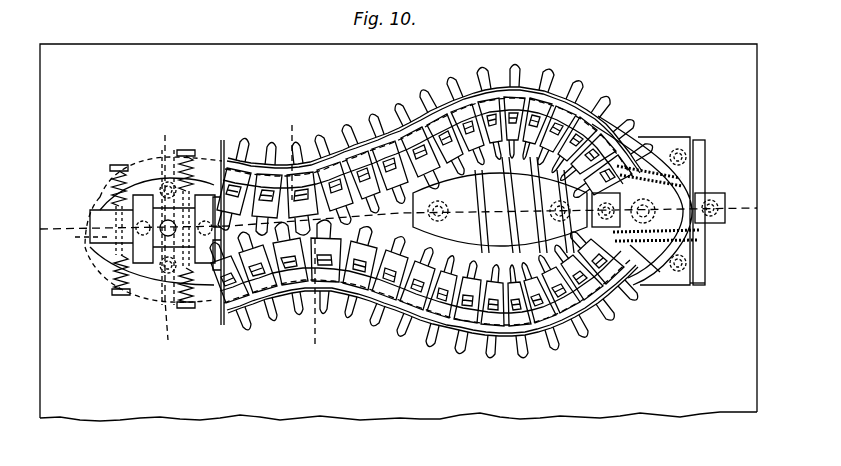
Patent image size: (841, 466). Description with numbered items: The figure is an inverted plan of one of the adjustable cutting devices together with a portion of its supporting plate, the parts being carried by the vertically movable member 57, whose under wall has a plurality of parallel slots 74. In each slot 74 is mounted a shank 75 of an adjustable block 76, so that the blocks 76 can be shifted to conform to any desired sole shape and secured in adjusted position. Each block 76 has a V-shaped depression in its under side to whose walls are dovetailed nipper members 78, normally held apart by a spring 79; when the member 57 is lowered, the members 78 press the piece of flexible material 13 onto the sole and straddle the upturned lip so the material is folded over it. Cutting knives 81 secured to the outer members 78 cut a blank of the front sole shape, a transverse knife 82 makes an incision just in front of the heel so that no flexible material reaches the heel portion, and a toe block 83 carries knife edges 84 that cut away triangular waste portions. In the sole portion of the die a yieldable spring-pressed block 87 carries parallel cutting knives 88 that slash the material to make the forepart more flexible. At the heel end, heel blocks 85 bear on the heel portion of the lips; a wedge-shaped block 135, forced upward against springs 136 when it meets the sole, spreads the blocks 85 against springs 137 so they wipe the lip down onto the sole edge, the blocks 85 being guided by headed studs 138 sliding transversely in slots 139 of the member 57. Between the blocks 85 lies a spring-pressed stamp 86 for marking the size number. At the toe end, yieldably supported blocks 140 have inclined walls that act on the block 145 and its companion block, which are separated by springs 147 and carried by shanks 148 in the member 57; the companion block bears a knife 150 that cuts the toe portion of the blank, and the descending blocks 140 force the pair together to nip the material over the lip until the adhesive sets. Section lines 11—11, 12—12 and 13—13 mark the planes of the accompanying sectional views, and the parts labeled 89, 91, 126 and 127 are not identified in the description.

The section line 11— 11 is at (398, 219).
The section line 12— 12 is at (172, 126).
The section line 13— 13 is at (278, 122).
The vertically movable member 57 is at (627, 415).
The parallel slots 74 is at (546, 335).
The shank 75 is at (228, 222).
The adjustable block 76 is at (560, 140).
The nipper member 78 is at (298, 288).
The spring 79 is at (618, 140).
The cutting knives 81 is at (340, 312).
The transverse knife 82 is at (221, 140).
The toe block 83 is at (682, 280).
The knife edges 84 is at (665, 286).
The heel blocks 85 is at (148, 268).
The spring-pressed stamp 86 is at (97, 257).
The spring-pressed block 87 is at (462, 224).
The cutting knives 88 is at (487, 246).
The block 89 is at (590, 225).
The upper rail 91 is at (322, 158).
The pivot pin 126 is at (684, 150).
The slot 127 is at (680, 170).
The wedge-shaped block 135 is at (143, 270).
The springs 136 is at (92, 243).
The springs 137 is at (113, 280).
The headed studs 138 is at (160, 272).
The slots 139 is at (168, 282).
The blocks 140 is at (648, 300).
The block 145 is at (690, 238).
The springs 147 is at (660, 258).
The shanks 148 is at (696, 278).
The knife 150 is at (712, 195).